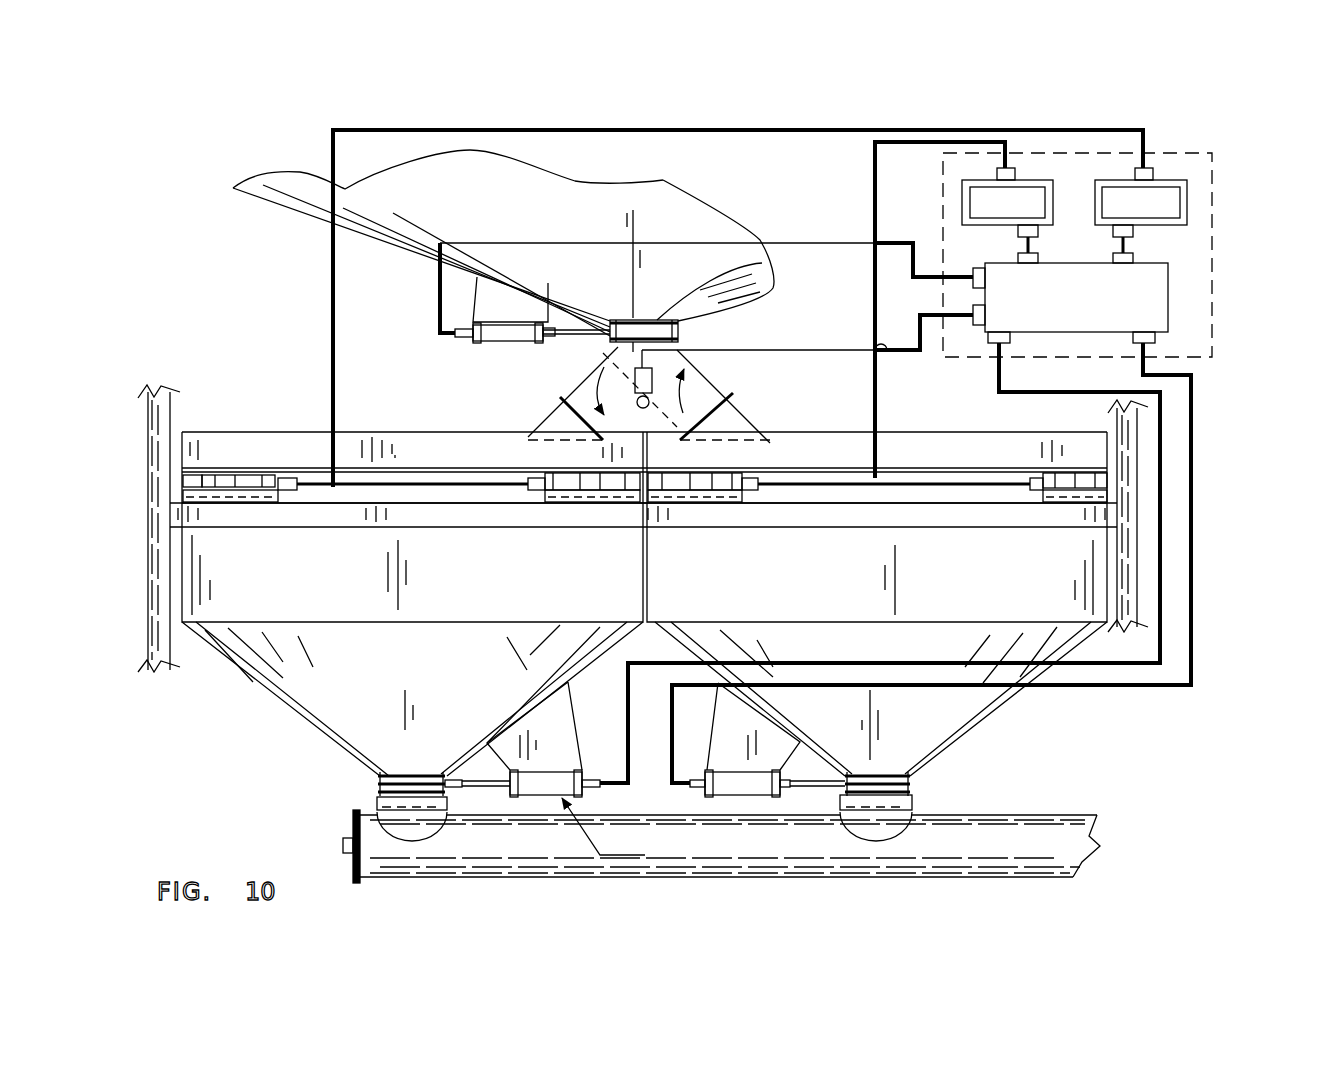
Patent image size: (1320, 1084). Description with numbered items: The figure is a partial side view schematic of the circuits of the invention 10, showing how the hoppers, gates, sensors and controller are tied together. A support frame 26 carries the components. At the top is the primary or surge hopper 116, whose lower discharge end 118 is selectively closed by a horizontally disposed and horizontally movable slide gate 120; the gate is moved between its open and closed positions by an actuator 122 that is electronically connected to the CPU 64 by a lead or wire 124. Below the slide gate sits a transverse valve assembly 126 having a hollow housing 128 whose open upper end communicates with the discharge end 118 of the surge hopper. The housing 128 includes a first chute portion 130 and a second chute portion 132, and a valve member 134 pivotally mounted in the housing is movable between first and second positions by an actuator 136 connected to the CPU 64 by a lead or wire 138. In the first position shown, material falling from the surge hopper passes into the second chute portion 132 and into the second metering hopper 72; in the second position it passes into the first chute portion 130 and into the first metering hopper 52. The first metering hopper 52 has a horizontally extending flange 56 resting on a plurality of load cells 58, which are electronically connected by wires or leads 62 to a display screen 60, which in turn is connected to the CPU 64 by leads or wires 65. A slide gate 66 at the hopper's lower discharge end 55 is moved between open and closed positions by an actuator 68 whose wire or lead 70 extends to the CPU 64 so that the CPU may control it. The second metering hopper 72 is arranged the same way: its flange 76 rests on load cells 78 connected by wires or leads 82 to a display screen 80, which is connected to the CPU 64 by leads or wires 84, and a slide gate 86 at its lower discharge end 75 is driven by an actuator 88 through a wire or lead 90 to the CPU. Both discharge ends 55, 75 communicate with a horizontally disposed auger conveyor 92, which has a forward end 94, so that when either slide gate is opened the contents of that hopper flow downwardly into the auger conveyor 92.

The sheet processing apparatus 10 is at (263, 148).
The support frame 26 is at (188, 400).
The first metering hopper 52 is at (335, 680).
The lower discharge end 55 is at (405, 772).
The horizontally extending flange 56 is at (398, 468).
The load cells 58 is at (248, 472).
The display screen 60 is at (1152, 185).
The wires or leads 62 is at (472, 130).
The CPU 64 is at (1148, 312).
The leads or wires 65 is at (1128, 243).
The slide gate 66 is at (405, 758).
The actuator 68 is at (563, 798).
The wire or lead 70 is at (632, 773).
The second metering hopper 72 is at (1005, 703).
The lower discharge end 75 is at (888, 763).
The horizontally extending flange 76 is at (912, 465).
The load cells 78 is at (688, 485).
The display screen 80 is at (1017, 190).
The wires or leads 82 is at (875, 200).
The leads or wires 84 is at (1030, 245).
The slide gate 86 is at (905, 776).
The actuator 88 is at (740, 790).
The wire or lead 90 is at (1120, 688).
The auger conveyor 92 is at (882, 878).
The forward end 94 is at (353, 866).
The primary or surge hopper 116 is at (310, 218).
The lower discharge end 118 is at (727, 268).
The slide gate 120 is at (572, 343).
The actuator 122 is at (500, 333).
The lead or wire 124 is at (634, 358).
The transverse valve assembly 126 is at (740, 376).
The hollow housing 128 is at (745, 392).
The first chute portion 130 is at (552, 397).
The second chute portion 132 is at (740, 407).
The valve member 134 is at (655, 400).
The actuator 136 is at (641, 320).
The lead or wire 138 is at (903, 352).